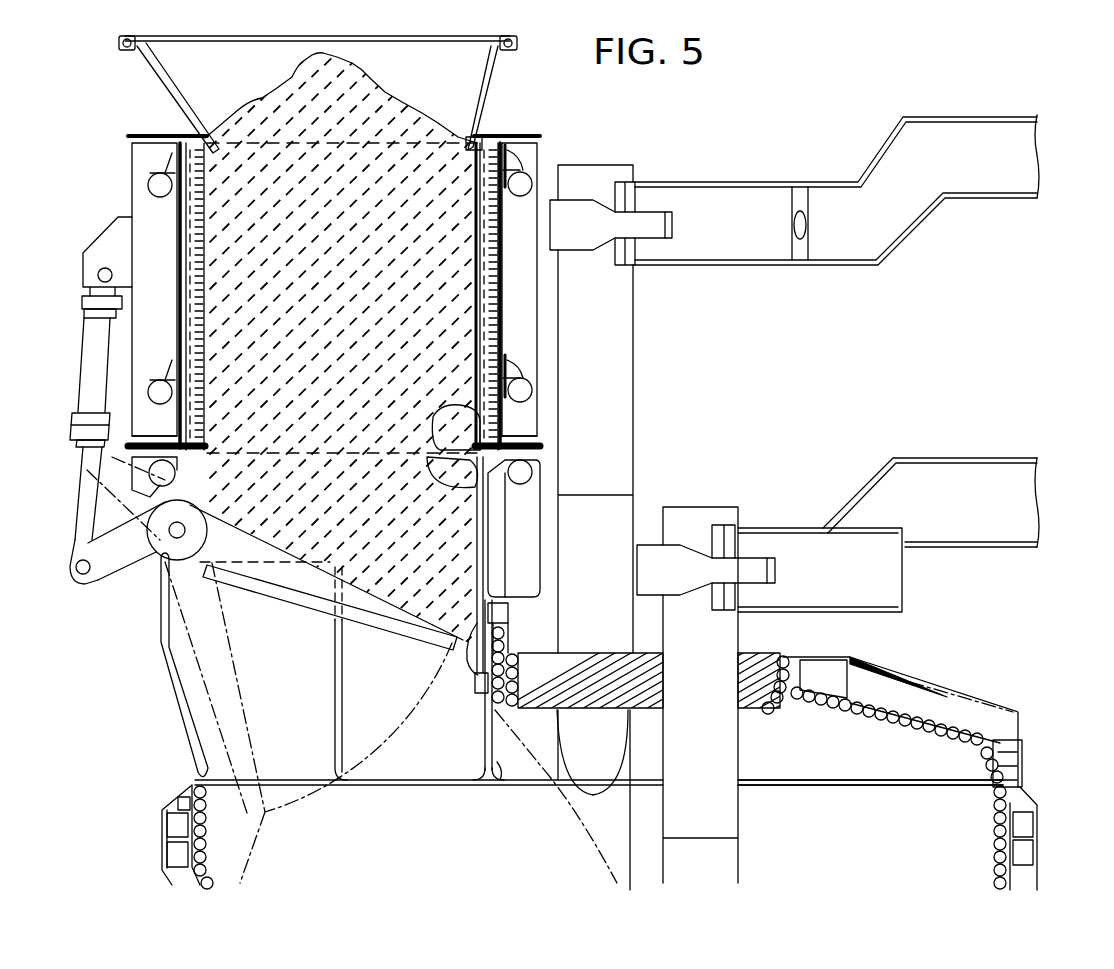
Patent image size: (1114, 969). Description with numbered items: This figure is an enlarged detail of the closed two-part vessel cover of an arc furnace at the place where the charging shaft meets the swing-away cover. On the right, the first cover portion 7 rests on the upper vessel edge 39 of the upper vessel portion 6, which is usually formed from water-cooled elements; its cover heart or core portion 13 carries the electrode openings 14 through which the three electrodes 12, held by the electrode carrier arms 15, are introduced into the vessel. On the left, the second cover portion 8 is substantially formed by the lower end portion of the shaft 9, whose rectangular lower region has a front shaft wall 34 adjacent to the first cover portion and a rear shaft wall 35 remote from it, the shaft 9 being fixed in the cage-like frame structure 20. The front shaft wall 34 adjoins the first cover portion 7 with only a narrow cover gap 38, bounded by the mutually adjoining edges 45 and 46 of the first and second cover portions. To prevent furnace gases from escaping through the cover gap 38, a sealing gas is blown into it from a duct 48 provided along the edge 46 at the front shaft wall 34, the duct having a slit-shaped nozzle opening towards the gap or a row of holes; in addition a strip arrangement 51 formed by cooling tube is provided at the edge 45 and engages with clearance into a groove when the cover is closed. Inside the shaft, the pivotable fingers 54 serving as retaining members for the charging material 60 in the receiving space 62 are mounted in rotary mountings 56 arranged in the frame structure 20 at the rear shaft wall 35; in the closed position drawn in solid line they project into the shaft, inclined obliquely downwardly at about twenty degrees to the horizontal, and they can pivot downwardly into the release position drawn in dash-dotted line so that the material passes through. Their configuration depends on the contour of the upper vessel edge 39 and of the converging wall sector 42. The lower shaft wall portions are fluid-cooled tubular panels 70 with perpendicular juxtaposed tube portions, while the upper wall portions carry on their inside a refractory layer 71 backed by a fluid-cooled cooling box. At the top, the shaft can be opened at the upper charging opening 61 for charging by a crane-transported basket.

The upper vessel portion 6 is at (973, 855).
The first cover portion 7 is at (873, 757).
The second cover portion 8 is at (393, 765).
The shaft 9 is at (187, 737).
The electrodes 12 is at (600, 187).
The cover heart or core portion 13 is at (765, 700).
The electrode openings 14 is at (742, 680).
The electrode carrier arms 15 is at (882, 228).
The frame structure 20 is at (145, 157).
The front shaft wall 34 is at (550, 310).
The rear shaft wall 35 is at (187, 343).
The cover gap 38 is at (487, 786).
The upper vessel edge 39 is at (193, 782).
The converging wall sector 42 is at (193, 857).
The edge of the first cover portion 45 is at (489, 744).
The edge of the second cover portion 46 is at (500, 790).
The duct 48 is at (508, 612).
The strip arrangement 51 is at (508, 643).
The pivotable fingers 54 is at (390, 622).
The rotary mountings 56 is at (157, 580).
The charging material 60 is at (190, 283).
The upper charging opening 61 is at (187, 76).
The receiving space 62 is at (207, 212).
The tubular panels 70 is at (158, 663).
The refractory layer or plate 71 is at (497, 130).